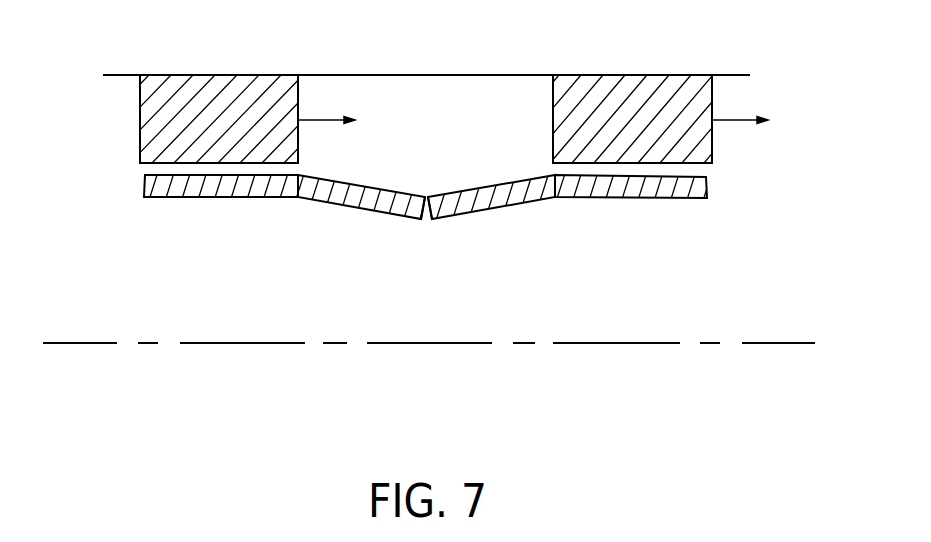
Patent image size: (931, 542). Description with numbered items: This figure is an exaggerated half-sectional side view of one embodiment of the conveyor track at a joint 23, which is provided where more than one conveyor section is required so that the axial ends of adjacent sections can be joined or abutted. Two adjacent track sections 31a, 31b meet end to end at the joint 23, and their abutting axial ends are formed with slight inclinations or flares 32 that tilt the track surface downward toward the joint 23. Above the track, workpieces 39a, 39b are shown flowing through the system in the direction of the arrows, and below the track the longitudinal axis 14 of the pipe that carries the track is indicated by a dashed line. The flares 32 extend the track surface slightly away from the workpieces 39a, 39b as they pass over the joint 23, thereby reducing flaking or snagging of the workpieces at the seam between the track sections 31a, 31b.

The workpiece 39a is at (202, 97).
The workpiece 39b is at (628, 98).
The track section 31a is at (198, 212).
The track section 31b is at (635, 211).
The joint 23 is at (298, 235).
The flare 32 is at (444, 182).
The longitudinal axis 14 is at (782, 342).